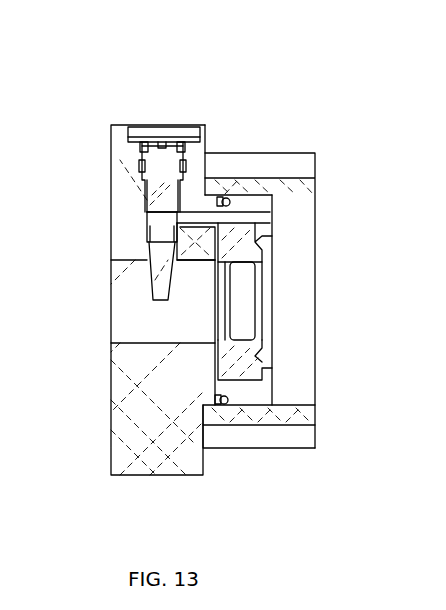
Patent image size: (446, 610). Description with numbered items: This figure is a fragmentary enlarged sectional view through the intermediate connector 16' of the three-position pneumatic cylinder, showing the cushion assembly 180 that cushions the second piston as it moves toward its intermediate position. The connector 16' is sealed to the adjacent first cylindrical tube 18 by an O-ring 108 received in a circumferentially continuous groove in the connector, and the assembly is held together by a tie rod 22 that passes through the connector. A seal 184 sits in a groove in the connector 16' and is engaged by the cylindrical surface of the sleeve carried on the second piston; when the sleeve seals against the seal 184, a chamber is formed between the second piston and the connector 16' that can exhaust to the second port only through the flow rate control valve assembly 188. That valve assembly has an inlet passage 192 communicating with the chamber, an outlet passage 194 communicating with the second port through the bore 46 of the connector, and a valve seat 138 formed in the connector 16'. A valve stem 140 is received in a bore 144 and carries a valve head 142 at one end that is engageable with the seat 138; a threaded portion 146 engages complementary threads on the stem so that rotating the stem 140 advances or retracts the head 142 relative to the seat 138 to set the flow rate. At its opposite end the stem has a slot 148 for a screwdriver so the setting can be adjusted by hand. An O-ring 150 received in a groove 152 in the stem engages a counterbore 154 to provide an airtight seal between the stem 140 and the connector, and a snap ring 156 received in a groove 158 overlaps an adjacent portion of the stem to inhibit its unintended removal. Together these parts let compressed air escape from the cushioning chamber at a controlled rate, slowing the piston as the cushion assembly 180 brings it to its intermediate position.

The intermediate connector 16' is at (152, 317).
The bore 46 is at (132, 327).
The slot 148 is at (141, 134).
The counterbore 154 is at (196, 140).
The flow rate control valve assembly 188 is at (162, 121).
The snap ring 156 is at (140, 143).
The groove 158 is at (182, 148).
The groove 152 is at (142, 172).
The O-ring 150 is at (183, 166).
The threaded portion 146 is at (145, 205).
The bore 144 is at (146, 216).
The valve seat 138 is at (150, 241).
The valve head 142 is at (148, 226).
The outlet passage 194 is at (150, 268).
The inlet passage 192 is at (268, 218).
The valve stem 140 is at (230, 201).
The seal 184 is at (255, 343).
The O-rings 108 is at (226, 406).
The first cylindrical tube 18 is at (297, 417).
The tie rods 22 is at (288, 450).
The cushion assembly 180 is at (262, 77).